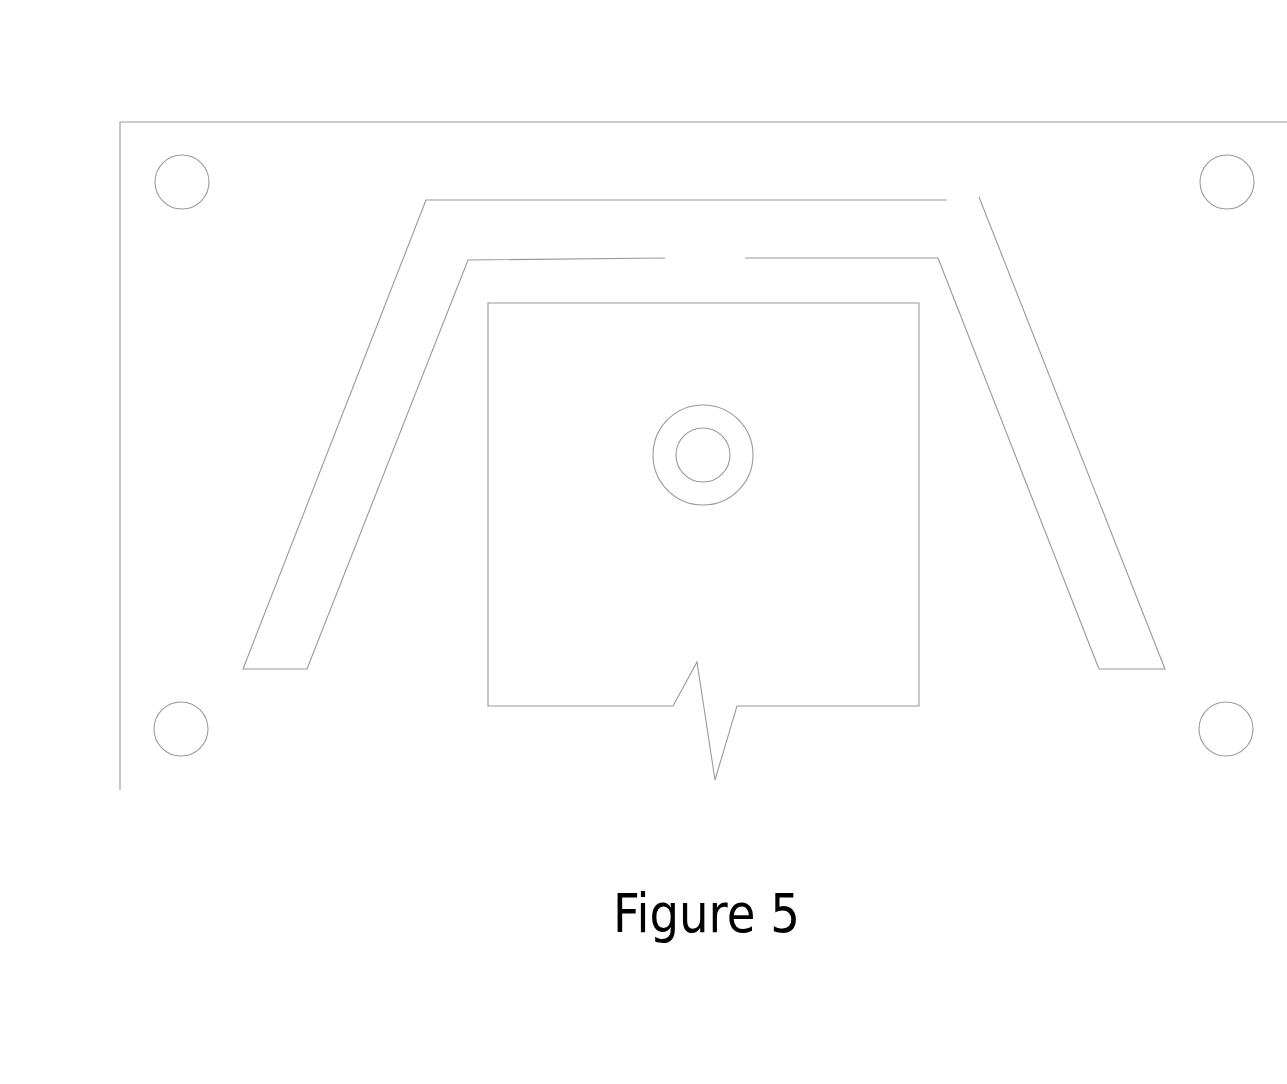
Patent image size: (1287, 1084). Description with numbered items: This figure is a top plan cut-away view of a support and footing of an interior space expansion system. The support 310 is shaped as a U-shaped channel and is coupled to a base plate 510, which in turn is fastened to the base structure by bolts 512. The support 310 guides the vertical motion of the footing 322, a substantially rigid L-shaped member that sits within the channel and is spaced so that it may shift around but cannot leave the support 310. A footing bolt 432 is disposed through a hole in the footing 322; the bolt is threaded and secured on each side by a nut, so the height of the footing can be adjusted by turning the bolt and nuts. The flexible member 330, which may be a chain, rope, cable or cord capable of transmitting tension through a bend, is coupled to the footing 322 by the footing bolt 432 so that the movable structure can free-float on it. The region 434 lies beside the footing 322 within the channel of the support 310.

The base plate 510 is at (1040, 125).
The bolts 512 is at (1202, 193).
The support 310 is at (728, 243).
The footing 322 is at (626, 648).
The flexible member 330 is at (745, 482).
The footing bolt 432 is at (720, 435).
The side wall 434 is at (1016, 557).